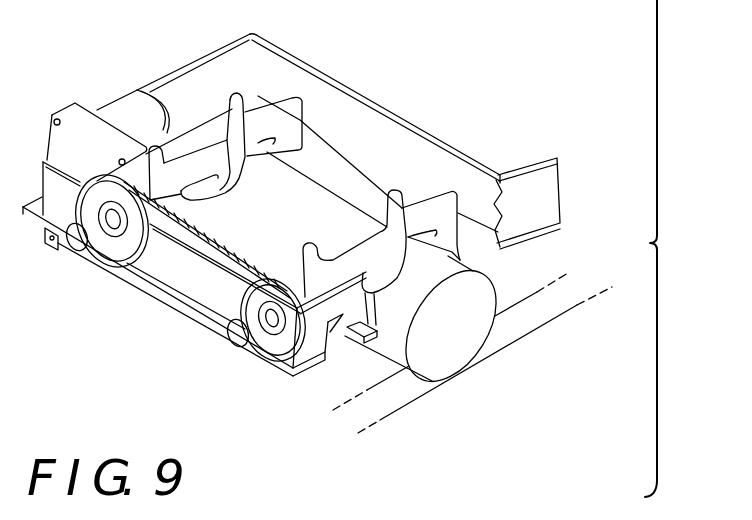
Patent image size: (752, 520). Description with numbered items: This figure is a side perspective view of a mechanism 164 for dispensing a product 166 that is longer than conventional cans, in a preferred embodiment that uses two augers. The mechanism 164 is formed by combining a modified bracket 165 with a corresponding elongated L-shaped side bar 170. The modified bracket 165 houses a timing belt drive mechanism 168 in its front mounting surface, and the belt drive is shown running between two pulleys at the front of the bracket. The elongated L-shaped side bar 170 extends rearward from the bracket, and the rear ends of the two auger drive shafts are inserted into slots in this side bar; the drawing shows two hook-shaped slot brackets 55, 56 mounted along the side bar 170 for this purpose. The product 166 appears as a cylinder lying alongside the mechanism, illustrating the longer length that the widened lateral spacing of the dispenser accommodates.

The mechanism 164 is at (686, 248).
The modified bracket 165 is at (201, 73).
The elongated L-shaped side bar 170 is at (380, 111).
The hook bracket 55 is at (300, 99).
The hook bracket 56 is at (454, 193).
The product 166 is at (455, 354).
The timing belt drive mechanism 168 is at (162, 299).